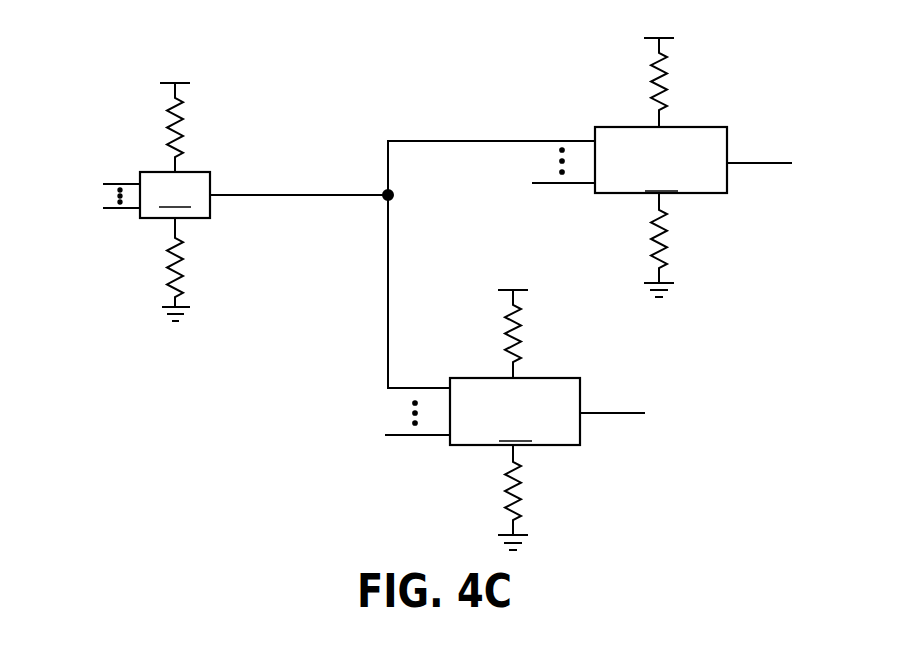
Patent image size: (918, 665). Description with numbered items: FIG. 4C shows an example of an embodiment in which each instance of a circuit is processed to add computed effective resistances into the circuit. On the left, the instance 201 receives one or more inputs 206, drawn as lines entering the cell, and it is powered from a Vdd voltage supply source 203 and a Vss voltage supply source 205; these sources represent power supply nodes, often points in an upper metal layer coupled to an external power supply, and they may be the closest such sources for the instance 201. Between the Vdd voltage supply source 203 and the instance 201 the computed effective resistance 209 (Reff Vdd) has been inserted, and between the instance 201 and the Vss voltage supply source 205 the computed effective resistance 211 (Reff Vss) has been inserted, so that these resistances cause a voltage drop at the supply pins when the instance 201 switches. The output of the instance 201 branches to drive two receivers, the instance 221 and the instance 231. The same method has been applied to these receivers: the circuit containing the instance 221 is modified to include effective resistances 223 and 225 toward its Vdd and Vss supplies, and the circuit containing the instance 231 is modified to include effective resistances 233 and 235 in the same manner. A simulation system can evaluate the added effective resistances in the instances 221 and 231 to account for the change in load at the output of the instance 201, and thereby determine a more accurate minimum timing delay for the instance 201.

The instance 201 is at (175, 195).
The Vdd voltage supply source 203 is at (152, 82).
The Vss voltage supply source 205 is at (240, 322).
The inputs 206 is at (120, 215).
The computed effective resistance (Reff Vdd) 209 is at (158, 133).
The computed effective resistance (Reff Vss) 211 is at (158, 263).
The instance 221 is at (629, 160).
The effective resistance 223 is at (645, 85).
The effective resistance 225 is at (645, 252).
The instance 231 is at (482, 411).
The effective resistance 233 is at (500, 335).
The effective resistance 235 is at (500, 503).